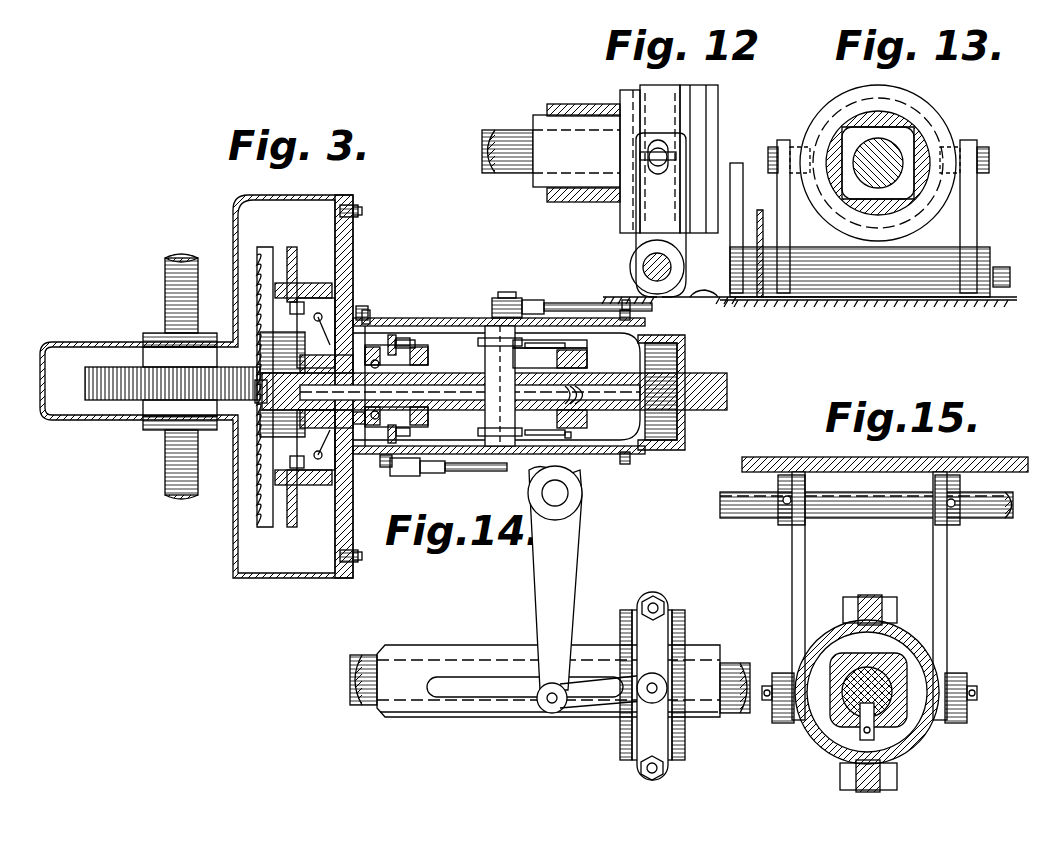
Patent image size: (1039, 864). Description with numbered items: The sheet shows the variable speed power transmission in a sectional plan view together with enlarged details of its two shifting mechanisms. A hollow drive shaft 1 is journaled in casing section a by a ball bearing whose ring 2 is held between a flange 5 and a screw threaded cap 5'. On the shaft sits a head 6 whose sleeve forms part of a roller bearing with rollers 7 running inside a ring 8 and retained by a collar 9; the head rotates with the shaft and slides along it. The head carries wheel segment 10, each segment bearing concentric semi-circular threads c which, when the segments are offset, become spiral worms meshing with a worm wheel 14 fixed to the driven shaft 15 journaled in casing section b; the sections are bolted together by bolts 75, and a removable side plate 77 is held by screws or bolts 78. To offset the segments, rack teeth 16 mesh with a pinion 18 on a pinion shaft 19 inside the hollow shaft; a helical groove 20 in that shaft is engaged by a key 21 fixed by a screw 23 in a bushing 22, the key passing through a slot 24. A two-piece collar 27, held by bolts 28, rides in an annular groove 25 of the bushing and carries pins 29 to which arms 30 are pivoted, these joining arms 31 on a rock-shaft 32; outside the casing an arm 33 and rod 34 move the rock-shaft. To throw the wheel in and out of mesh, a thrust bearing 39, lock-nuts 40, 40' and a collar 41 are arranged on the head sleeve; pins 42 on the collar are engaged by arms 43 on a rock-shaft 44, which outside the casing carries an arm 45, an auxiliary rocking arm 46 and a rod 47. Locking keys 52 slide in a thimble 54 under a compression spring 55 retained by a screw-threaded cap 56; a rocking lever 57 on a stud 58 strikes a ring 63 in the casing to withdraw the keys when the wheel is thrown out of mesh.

In FIG. 3, the hollow drive shaft 1 is at (470, 392).
In FIG. 12, the hollow drive shaft 1 is at (576, 151).
In FIG. 13, the hollow drive shaft 1 is at (905, 157).
In FIG. 14, the hollow drive shaft 1 is at (416, 646).
In FIG. 15, the hollow drive shaft 1 is at (893, 690).
In FIG. 3, the ball bearing ring 2 is at (676, 368).
In FIG. 3, the flange 5 is at (661, 377).
In FIG. 3, the screw threaded cap 5' is at (698, 331).
In FIG. 3, the head 6 is at (340, 415).
In FIG. 12, the head 6 is at (563, 104).
In FIG. 13, the head 6 is at (825, 140).
In FIG. 3, the rollers 7 is at (352, 438).
In FIG. 3, the ring 8 is at (316, 401).
In FIG. 3, the collar 9 is at (316, 333).
In FIG. 3, the wheel segment 10 is at (285, 540).
In FIG. 3, the worm wheel 14 is at (88, 384).
In FIG. 3, the driven shaft 15 is at (165, 296).
In FIG. 3, the rack teeth 16 is at (262, 414).
In FIG. 3, the pinion 18 is at (262, 352).
In FIG. 3, the pinion shaft 19 is at (615, 412).
In FIG. 12, the pinion shaft 19 is at (500, 128).
In FIG. 13, the pinion shaft 19 is at (905, 210).
In FIG. 14, the pinion shaft 19 is at (745, 676).
In FIG. 15, the pinion shaft 19 is at (848, 662).
In FIG. 3, the helical groove 20 is at (590, 403).
In FIG. 15, the helical groove 20 is at (855, 728).
In FIG. 3, the key 21 is at (578, 412).
In FIG. 15, the key 21 is at (880, 742).
In FIG. 3, the bushing 22 is at (588, 360).
In FIG. 14, the bushing 22 is at (686, 646).
In FIG. 15, the bushing 22 is at (888, 652).
In FIG. 15, the screw 23 is at (858, 750).
In FIG. 3, the slot 24 is at (485, 410).
In FIG. 14, the slot 24 is at (476, 676).
In FIG. 15, the slot 24 is at (885, 714).
In FIG. 3, the annular groove 25 is at (550, 357).
In FIG. 14, the annular groove 25 is at (668, 630).
In FIG. 3, the two-piece collar 27 is at (587, 350).
In FIG. 14, the two-piece collar 27 is at (640, 752).
In FIG. 15, the two-piece collar 27 is at (936, 652).
In FIG. 14, the bolts 28 is at (660, 600).
In FIG. 15, the bolts 28 is at (888, 600).
In FIG. 14, the pins 29 is at (667, 686).
In FIG. 15, the pins 29 is at (768, 702).
In FIG. 3, the arms 30 is at (592, 468).
In FIG. 14, the arms 30 is at (618, 700).
In FIG. 15, the arms 30 is at (785, 724).
In FIG. 3, the arms 31 is at (485, 340).
In FIG. 14, the arms 31 is at (555, 589).
In FIG. 15, the arms 31 is at (792, 574).
In FIG. 3, the rock-shaft 32 is at (508, 298).
In FIG. 14, the rock-shaft 32 is at (560, 497).
In FIG. 15, the rock-shaft 32 is at (990, 516).
In FIG. 3, the arm 33 is at (490, 304).
In FIG. 3, the rod 34 is at (575, 292).
In FIG. 3, the thrust bearing 39 is at (382, 460).
In FIG. 12, the thrust bearing 39 is at (700, 86).
In FIG. 13, the thrust bearing 39 is at (928, 112).
In FIG. 3, the lock-nut 40 is at (413, 355).
In FIG. 12, the lock-nut 40 is at (614, 157).
In FIG. 3, the lock-nut 40' is at (430, 336).
In FIG. 12, the lock-nut 40' is at (636, 145).
In FIG. 3, the collar 41 is at (428, 418).
In FIG. 12, the collar 41 is at (660, 92).
In FIG. 13, the collar 41 is at (930, 130).
In FIG. 3, the pins or lugs 42 is at (395, 334).
In FIG. 12, the pins or lugs 42 is at (648, 158).
In FIG. 13, the pins or lugs 42 is at (770, 150).
In FIG. 3, the arm 43 is at (406, 338).
In FIG. 12, the arm 43 is at (634, 236).
In FIG. 13, the arm 43 is at (790, 222).
In FIG. 3, the rock-shaft 44 is at (408, 476).
In FIG. 12, the rock-shaft 44 is at (642, 266).
In FIG. 13, the rock-shaft 44 is at (1008, 270).
In FIG. 13, the arm 45 is at (742, 212).
In FIG. 3, the auxiliary rocking arm or latch 46 is at (439, 479).
In FIG. 3, the rod 47 is at (486, 472).
In FIG. 3, the locking keys or pins 52 is at (292, 252).
In FIG. 3, the sleeve or thimble 54 is at (305, 283).
In FIG. 3, the compression spring 55 is at (322, 486).
In FIG. 3, the screw-threaded cap 56 is at (345, 272).
In FIG. 3, the rocking lever 57 is at (345, 288).
In FIG. 3, the stud 58 is at (290, 308).
In FIG. 3, the ring 63 is at (348, 308).
In FIG. 3, the bolts 75 is at (360, 211).
In FIG. 3, the removable side plate 77 is at (446, 318).
In FIG. 3, the screws or bolts 78 is at (640, 472).
In FIG. 3, the casing section a is at (354, 238).
In FIG. 13, the casing section a is at (765, 302).
In FIG. 15, the casing section a is at (935, 458).
In FIG. 3, the casing section b is at (105, 342).
In FIG. 3, the threads c is at (262, 292).